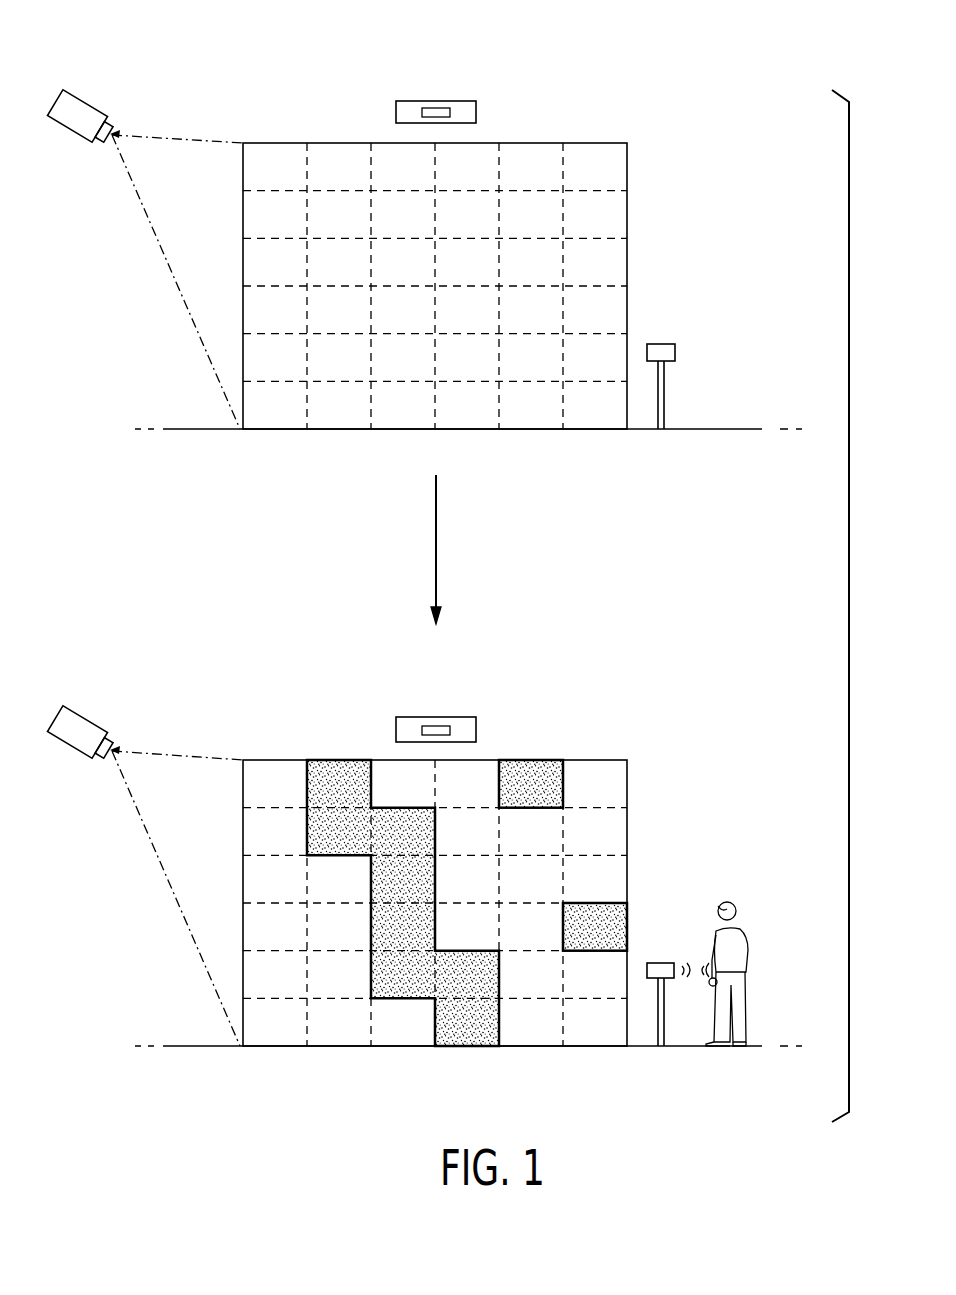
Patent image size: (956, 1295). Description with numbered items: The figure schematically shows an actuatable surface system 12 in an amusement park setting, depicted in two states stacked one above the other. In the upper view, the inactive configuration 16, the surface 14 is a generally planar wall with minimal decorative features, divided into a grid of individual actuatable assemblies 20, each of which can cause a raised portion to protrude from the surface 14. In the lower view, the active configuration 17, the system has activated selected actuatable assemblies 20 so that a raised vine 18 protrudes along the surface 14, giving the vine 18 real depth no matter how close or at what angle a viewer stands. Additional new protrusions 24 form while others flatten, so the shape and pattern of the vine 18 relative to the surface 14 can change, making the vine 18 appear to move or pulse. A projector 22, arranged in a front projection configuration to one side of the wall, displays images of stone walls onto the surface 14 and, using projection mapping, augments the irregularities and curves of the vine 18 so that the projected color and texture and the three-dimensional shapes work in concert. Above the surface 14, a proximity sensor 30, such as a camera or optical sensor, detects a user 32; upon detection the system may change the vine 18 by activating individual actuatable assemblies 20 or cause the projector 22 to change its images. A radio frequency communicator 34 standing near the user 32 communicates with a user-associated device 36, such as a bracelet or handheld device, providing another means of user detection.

The actuatable surface system 12 is at (206, 48).
The surface 14 is at (281, 271).
The inactive configuration 16 is at (183, 334).
The active configuration 17 is at (183, 950).
The raised vine 18 is at (338, 768).
The actuatable assembly 20 is at (258, 178).
The projector 22 is at (70, 140).
The protrusion 24 is at (532, 768).
The proximity sensor 30 is at (435, 100).
The user 32 is at (740, 930).
The radio frequency communicator 34 is at (660, 962).
The user-associated device 36 is at (722, 982).